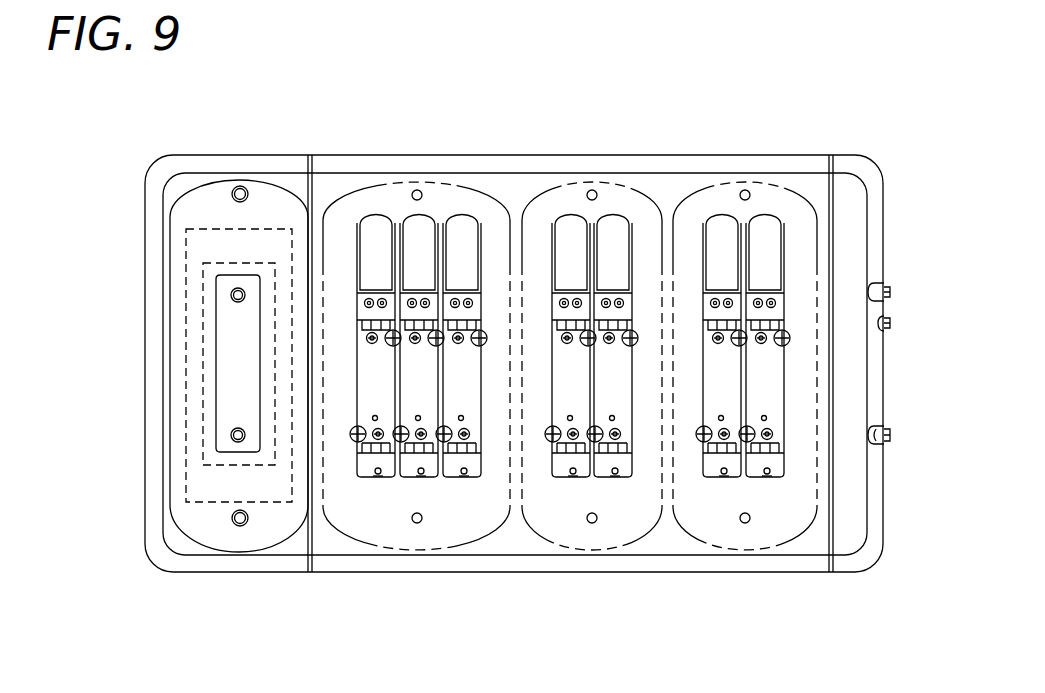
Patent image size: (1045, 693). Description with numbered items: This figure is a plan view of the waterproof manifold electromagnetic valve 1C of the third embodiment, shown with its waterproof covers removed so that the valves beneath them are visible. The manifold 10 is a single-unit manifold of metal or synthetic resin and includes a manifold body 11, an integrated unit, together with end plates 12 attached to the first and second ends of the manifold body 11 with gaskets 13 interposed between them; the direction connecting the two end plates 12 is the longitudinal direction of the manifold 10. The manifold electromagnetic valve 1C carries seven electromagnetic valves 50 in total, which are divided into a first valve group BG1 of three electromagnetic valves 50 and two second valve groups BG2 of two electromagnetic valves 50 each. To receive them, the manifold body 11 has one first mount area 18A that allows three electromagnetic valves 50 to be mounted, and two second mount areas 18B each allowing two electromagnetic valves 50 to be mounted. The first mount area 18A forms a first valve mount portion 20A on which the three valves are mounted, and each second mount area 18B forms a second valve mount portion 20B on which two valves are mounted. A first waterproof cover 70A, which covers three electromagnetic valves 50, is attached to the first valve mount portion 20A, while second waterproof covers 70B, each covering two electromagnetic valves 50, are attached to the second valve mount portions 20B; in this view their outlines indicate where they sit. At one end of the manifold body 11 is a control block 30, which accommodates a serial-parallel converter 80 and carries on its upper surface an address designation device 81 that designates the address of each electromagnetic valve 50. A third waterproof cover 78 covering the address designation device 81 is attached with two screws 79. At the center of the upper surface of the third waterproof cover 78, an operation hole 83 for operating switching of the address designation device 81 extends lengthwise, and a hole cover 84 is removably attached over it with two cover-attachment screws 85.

The manifold electromagnetic valve 1C is at (507, 347).
The manifold 10 is at (741, 139).
The manifold body 11 is at (686, 165).
The end plate 12 is at (872, 214).
The gasket 13 is at (832, 353).
The control block 30 is at (212, 165).
The electromagnetic valve 50 is at (425, 233).
The first waterproof cover 70A is at (350, 172).
The second waterproof cover 70B is at (524, 174).
The third waterproof cover 78 is at (183, 172).
The screw 79 is at (242, 190).
The serial-parallel converter 80 is at (205, 246).
The address designation device 81 is at (200, 345).
The operation hole 83 is at (222, 380).
The hole cover 84 is at (230, 399).
The cover-attachment screw 85 is at (231, 294).
The first valve mount portion 20A is at (362, 508).
The second valve mount portion 20B is at (547, 506).
The first valve group BG1 is at (399, 511).
The second valve group BG2 is at (576, 510).
The first mount area 18A is at (446, 504).
The second mount area 18B is at (612, 506).